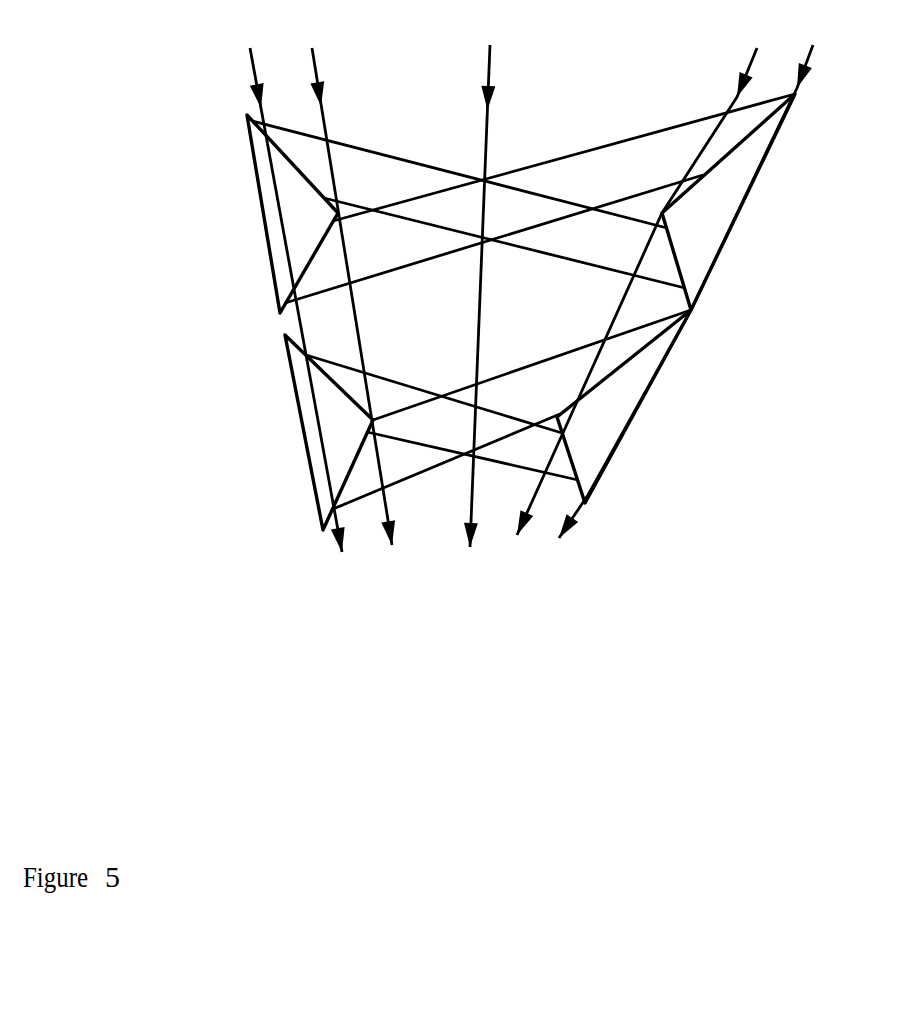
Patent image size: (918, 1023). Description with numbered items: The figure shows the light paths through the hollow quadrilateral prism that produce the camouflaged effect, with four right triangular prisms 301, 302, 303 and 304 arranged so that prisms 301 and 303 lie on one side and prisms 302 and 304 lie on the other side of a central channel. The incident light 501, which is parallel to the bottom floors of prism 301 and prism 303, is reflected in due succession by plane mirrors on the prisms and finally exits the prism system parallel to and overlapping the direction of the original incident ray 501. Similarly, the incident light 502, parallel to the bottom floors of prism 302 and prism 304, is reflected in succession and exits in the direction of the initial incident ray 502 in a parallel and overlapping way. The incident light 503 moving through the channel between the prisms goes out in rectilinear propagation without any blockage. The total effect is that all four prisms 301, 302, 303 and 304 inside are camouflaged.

The prism 301 is at (293, 228).
The prism 302 is at (727, 200).
The prism 303 is at (343, 444).
The prism 304 is at (633, 397).
The incident light 501 is at (292, 79).
The incident light 502 is at (780, 73).
The incident light 503 is at (482, 113).